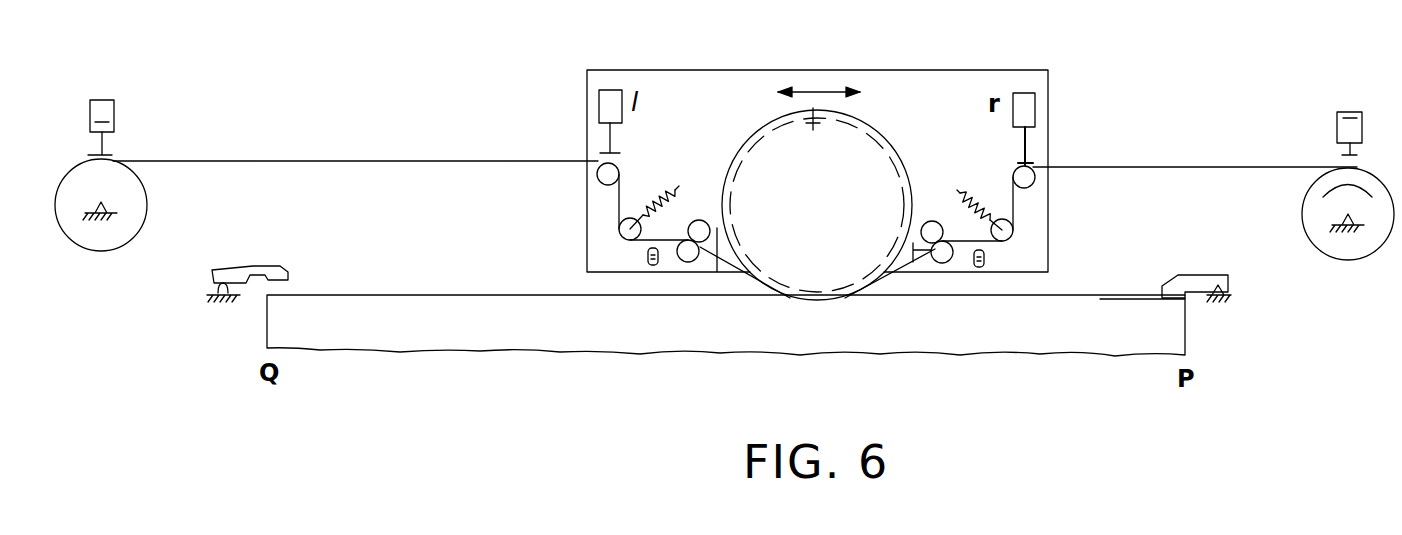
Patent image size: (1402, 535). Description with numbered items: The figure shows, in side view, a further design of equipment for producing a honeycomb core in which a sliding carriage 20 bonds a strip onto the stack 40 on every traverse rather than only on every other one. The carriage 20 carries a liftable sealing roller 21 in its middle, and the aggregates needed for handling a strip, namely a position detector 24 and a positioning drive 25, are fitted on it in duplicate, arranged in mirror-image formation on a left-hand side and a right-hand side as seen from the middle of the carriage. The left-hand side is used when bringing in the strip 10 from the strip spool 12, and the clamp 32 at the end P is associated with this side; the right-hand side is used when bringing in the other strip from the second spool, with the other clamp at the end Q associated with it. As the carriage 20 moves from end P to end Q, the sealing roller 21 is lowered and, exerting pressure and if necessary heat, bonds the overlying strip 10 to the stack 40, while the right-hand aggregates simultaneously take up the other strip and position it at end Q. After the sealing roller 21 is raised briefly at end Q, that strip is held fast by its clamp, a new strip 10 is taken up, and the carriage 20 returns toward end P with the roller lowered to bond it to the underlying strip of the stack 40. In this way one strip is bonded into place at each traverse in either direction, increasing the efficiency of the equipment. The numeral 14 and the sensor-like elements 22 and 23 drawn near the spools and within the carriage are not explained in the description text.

The strip 10 is at (355, 111).
The strip spool 12 is at (101, 249).
The belt sensor 14 is at (101, 108).
The sliding carriage 20 is at (893, 93).
The sealing roller 21 is at (813, 110).
The left sensor 22 is at (640, 130).
The left tension spring 23 is at (666, 167).
The position detector 24 is at (648, 323).
The positioning drive 25 is at (733, 309).
The clamp 32 is at (1196, 250).
The stack 40 is at (1117, 330).